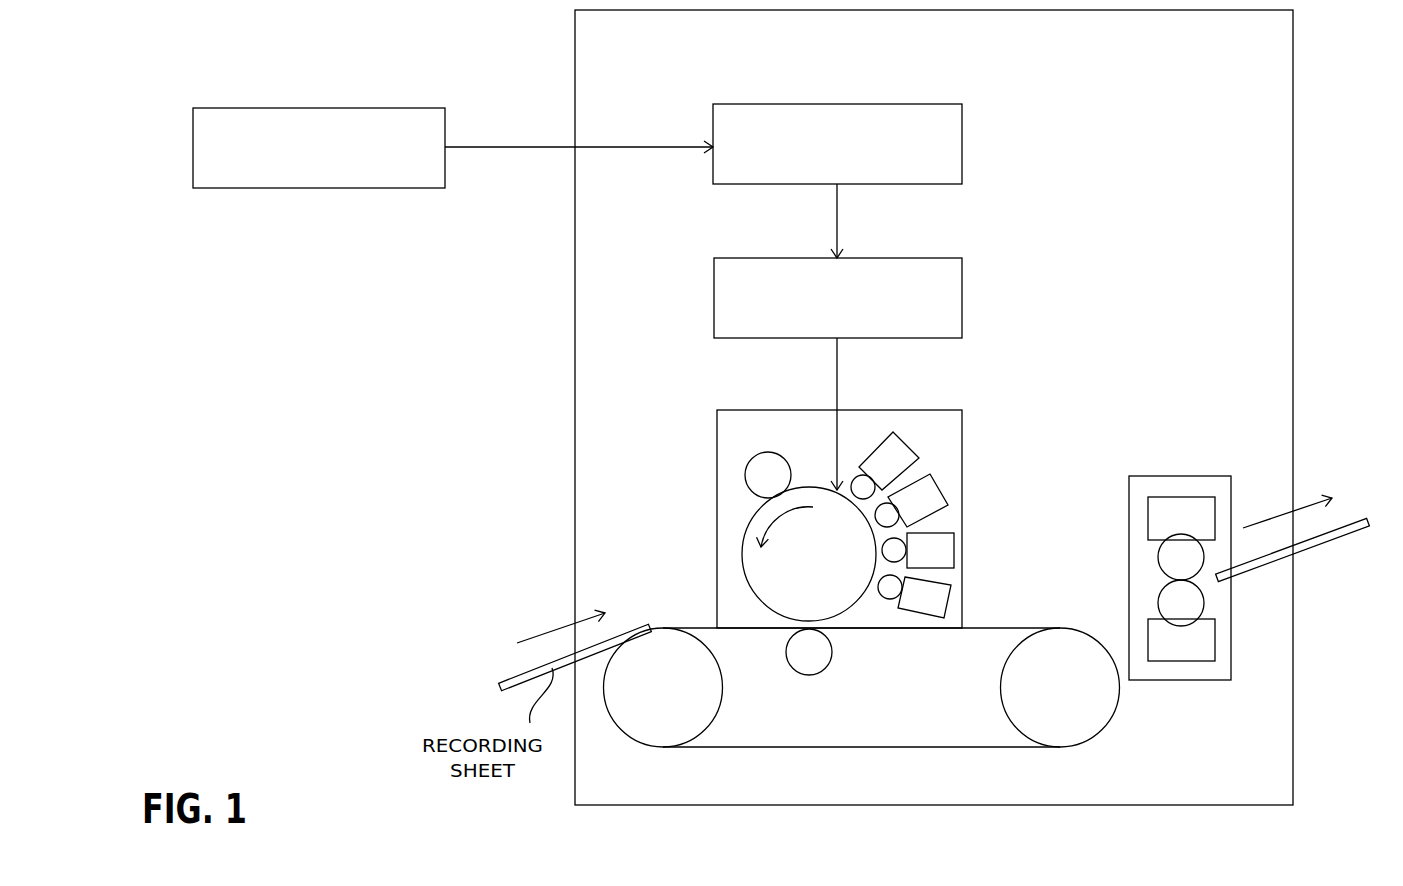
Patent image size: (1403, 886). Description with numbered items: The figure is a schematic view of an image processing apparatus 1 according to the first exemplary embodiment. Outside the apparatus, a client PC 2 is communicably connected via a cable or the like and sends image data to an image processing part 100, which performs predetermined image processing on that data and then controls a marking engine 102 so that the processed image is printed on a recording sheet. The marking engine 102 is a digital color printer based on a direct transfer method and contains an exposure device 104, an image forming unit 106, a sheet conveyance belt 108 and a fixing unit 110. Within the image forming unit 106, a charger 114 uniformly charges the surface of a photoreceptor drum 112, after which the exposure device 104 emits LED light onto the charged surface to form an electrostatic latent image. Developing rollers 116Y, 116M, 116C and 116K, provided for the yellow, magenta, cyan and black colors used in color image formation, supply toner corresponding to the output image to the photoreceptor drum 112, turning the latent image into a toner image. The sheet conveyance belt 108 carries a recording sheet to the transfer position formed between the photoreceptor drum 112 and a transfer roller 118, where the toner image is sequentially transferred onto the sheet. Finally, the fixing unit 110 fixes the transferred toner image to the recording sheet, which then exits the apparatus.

The image processing apparatus 1 is at (625, 805).
The client PC 2 is at (232, 188).
The image processing part 100 is at (962, 129).
The marking engine 102 is at (1156, 214).
The exposure device 104 is at (962, 282).
The image forming unit 106 is at (962, 411).
The sheet conveyance belt 108 is at (742, 747).
The fixing unit 110 is at (1153, 680).
The photoreceptor drum 112 is at (745, 553).
The charger 114 is at (745, 477).
The developing roller (yellow) 116Y is at (917, 452).
The developing roller (magenta) 116M is at (946, 500).
The developing roller (cyan) 116C is at (954, 551).
The developing roller (black) 116K is at (948, 606).
The transfer roller 118 is at (832, 652).